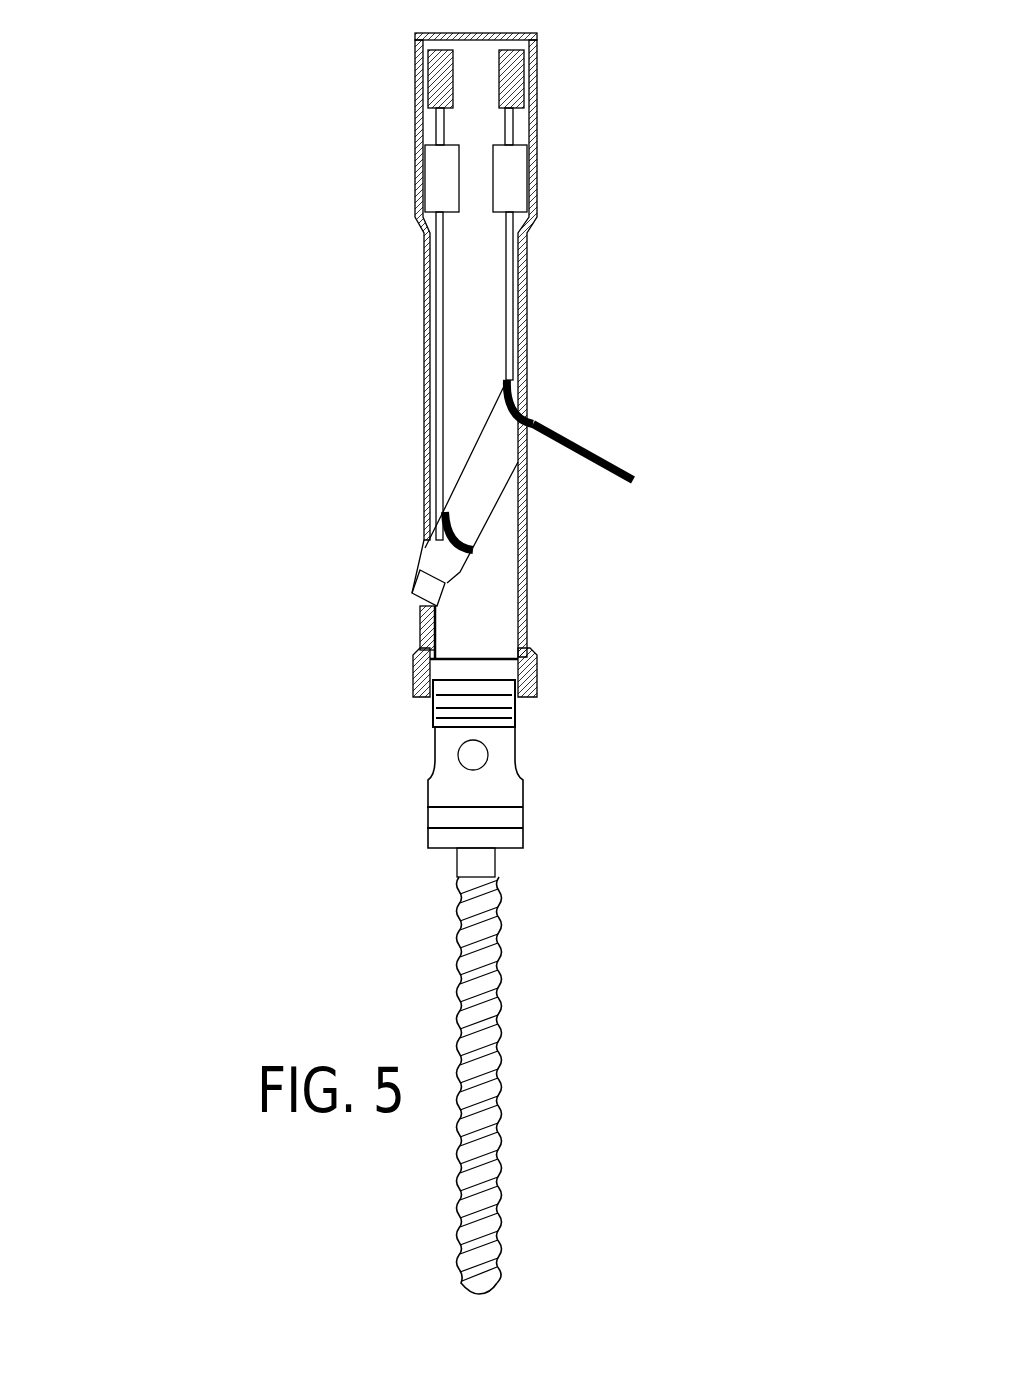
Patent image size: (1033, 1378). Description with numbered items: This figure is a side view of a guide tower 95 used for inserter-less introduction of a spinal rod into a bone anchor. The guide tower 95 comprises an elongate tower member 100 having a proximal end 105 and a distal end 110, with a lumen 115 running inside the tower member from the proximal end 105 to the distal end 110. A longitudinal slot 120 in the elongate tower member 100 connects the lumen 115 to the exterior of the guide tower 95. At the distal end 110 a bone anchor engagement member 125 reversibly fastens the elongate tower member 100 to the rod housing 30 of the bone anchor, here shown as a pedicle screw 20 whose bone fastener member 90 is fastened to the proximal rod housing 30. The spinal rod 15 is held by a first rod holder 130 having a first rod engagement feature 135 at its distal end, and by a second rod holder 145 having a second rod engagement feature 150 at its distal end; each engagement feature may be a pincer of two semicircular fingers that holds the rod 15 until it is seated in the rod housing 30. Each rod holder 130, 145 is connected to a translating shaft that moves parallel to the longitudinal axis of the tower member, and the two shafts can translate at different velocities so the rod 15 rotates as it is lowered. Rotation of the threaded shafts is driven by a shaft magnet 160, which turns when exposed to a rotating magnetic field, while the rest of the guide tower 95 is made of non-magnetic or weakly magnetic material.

The guide tower 95 is at (205, 180).
The elongate tower member 100 is at (580, 250).
The proximal end 105 is at (545, 37).
The distal end 110 is at (550, 673).
The lumen 115 is at (498, 294).
The longitudinal slot 120 is at (410, 336).
The bone anchor engagement member 125 is at (427, 698).
The first rod holder 130 is at (443, 368).
The first rod engagement feature 135 is at (470, 547).
The second rod holder 145 is at (527, 347).
The rod 15 is at (552, 395).
The second rod engagement feature 150 is at (611, 467).
The shaft magnet 160 is at (453, 92).
The pedicle screw 20 is at (546, 1024).
The rod housing 30 is at (538, 828).
The bone fastener member 90 is at (512, 1096).